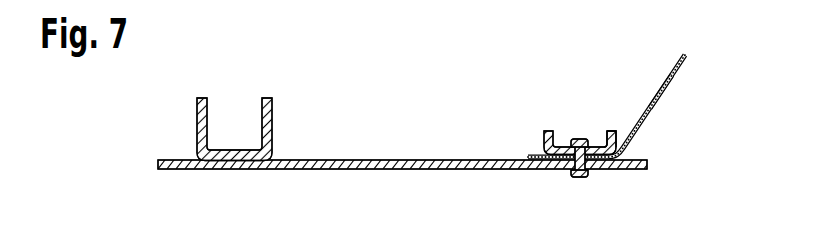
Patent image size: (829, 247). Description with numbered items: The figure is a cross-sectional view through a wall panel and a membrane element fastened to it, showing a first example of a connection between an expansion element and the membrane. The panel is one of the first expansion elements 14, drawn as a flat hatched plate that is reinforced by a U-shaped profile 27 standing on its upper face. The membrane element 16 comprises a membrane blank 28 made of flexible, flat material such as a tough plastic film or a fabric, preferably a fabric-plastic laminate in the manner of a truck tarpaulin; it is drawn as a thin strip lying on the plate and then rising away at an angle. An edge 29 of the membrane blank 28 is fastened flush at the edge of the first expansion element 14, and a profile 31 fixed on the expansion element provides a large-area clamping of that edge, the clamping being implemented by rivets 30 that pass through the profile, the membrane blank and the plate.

The first expansion element 14 is at (352, 159).
The membrane element 16 is at (661, 112).
The U-shaped profile 27 is at (198, 116).
The membrane blank 28 is at (667, 80).
The edge of the membrane blank 29 is at (527, 156).
The rivet 30 is at (583, 178).
The profile 31 is at (605, 130).